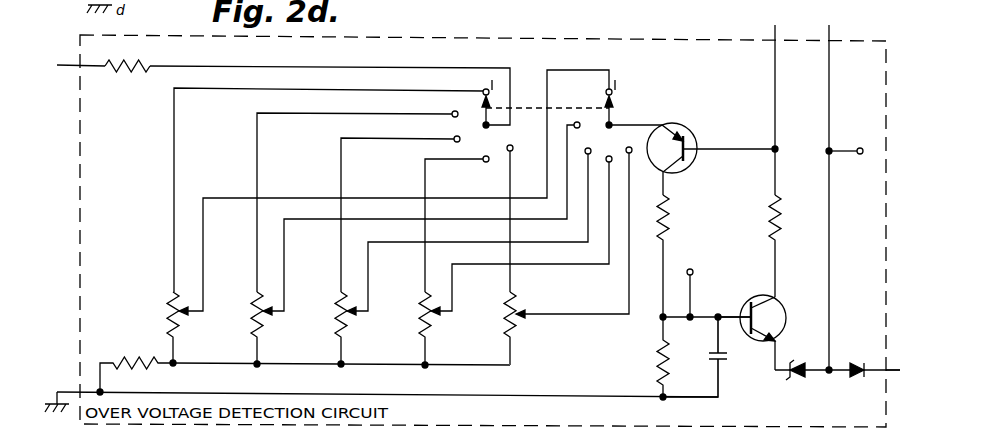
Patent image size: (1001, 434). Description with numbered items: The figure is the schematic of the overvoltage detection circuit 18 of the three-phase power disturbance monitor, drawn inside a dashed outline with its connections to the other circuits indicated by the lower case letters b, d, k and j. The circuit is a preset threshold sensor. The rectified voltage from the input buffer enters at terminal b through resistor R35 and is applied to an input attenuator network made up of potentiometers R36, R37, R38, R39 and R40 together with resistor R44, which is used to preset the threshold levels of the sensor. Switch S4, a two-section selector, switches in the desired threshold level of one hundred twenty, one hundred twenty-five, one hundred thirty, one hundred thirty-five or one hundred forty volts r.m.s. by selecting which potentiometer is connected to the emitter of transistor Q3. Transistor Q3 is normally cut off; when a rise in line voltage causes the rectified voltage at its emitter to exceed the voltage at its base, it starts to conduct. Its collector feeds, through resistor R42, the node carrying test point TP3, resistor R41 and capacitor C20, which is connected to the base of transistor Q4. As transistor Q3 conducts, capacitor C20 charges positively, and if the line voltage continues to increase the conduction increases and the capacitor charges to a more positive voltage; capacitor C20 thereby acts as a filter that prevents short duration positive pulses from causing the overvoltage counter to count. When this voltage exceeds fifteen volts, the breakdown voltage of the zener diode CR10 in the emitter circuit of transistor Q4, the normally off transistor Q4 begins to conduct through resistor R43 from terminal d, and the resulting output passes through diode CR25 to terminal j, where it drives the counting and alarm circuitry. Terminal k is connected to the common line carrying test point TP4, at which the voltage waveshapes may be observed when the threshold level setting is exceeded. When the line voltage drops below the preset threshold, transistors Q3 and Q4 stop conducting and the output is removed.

The overvoltage detection circuit 18 is at (540, 38).
The resistor R35 is at (125, 80).
The potentiometer R36 is at (158, 327).
The potentiometer R37 is at (242, 328).
The potentiometer R38 is at (326, 328).
The potentiometer R39 is at (410, 328).
The potentiometer R40 is at (495, 328).
The resistor R41 is at (637, 358).
The resistor R42 is at (678, 256).
The resistor R43 is at (757, 246).
The resistor R44 is at (135, 367).
The switch S4 is at (545, 121).
The transistor Q3 is at (692, 155).
The transistor Q4 is at (762, 331).
The capacitor C20 is at (695, 357).
The diode CR10 is at (801, 392).
The diode CR25 is at (864, 362).
The test point TP3 is at (688, 284).
The test point TP4 is at (846, 141).
The interconnection b is at (74, 65).
The interconnection d is at (774, 99).
The interconnection k is at (829, 187).
The interconnection j is at (896, 372).